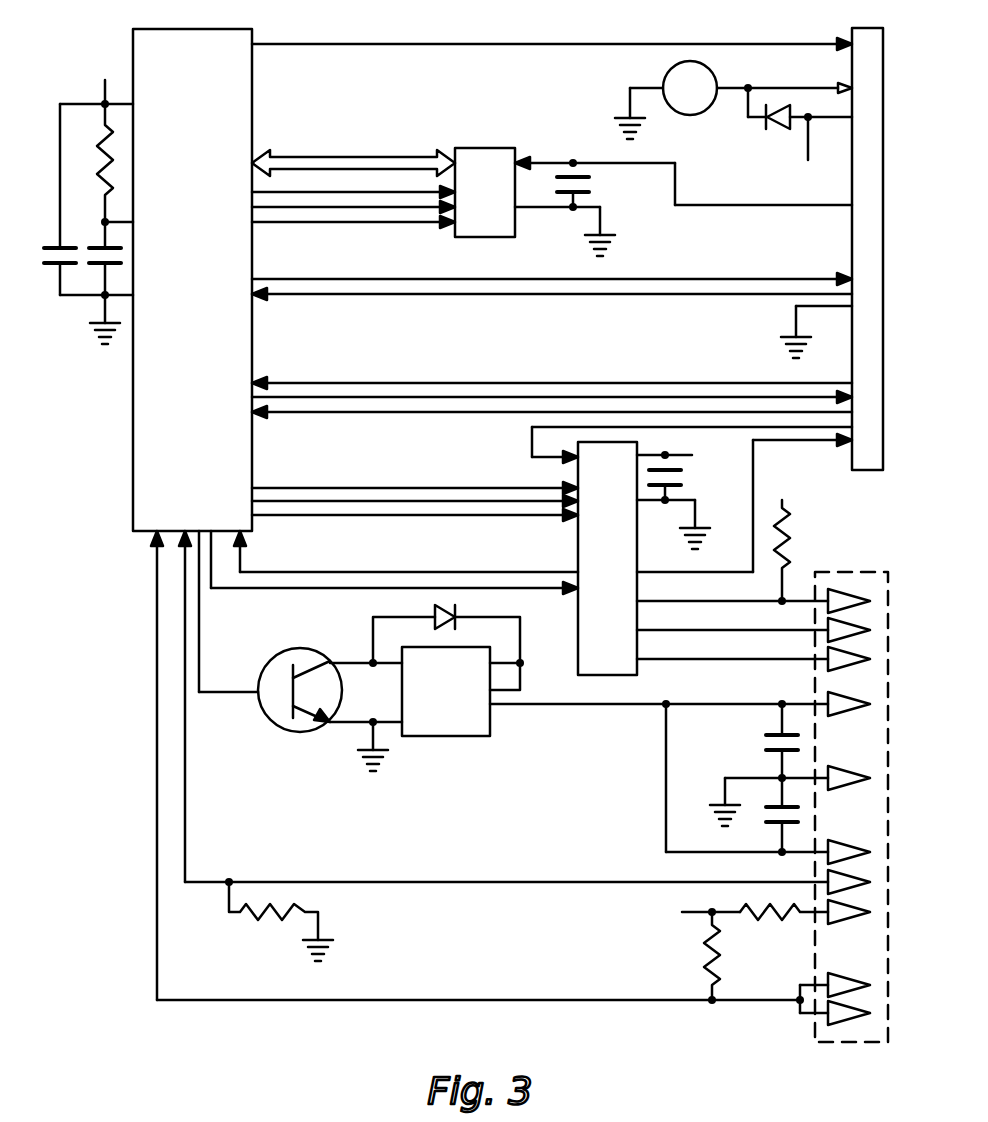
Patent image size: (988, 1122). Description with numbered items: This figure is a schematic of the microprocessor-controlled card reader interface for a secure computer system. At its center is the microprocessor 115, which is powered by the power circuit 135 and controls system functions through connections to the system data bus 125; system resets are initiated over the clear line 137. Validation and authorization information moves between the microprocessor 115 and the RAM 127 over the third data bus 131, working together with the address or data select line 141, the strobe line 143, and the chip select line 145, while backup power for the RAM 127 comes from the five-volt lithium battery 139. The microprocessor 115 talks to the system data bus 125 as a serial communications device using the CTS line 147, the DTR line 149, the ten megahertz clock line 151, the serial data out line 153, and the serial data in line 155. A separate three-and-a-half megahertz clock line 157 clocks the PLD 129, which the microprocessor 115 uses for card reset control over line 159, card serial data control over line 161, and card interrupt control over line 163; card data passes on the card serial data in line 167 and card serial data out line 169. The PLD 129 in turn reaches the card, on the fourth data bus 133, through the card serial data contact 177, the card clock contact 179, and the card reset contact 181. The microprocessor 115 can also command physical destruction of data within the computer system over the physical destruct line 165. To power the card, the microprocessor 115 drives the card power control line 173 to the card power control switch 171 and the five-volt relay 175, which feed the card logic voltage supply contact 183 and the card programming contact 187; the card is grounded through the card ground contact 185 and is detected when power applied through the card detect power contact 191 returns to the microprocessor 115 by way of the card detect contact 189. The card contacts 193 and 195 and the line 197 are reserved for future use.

The microprocessor 115 is at (254, 72).
The system data bus 125 is at (850, 250).
The random access memory (RAM) 127 is at (482, 146).
The program logic device (PLD) 129 is at (570, 556).
The third data bus 131 is at (388, 157).
The fourth data bus 133 is at (850, 572).
The power circuit 135 is at (80, 358).
The clear 137 is at (412, 46).
The +5 volt lithium battery 139 is at (692, 116).
The address or data select 141 is at (296, 226).
The strobe 143 is at (356, 210).
The chip select 145 is at (416, 196).
The clear to send (CTS) 147 is at (448, 296).
The data terminal ready (DTR) 149 is at (497, 282).
The 10 MHz clock 151 is at (296, 418).
The serial data out 153 is at (358, 400).
The serial data in 155 is at (418, 386).
The 3.5 MHz clock 157 is at (524, 440).
The card reset 159 is at (296, 522).
The card serial data control 161 is at (358, 504).
The card interrupt control 163 is at (418, 492).
The physical destruct 165 is at (812, 443).
The card serial data in 167 is at (460, 572).
The card serial data out 169 is at (270, 590).
The card power control switch 171 is at (302, 737).
The card power control line 173 is at (230, 693).
The +5 volt relay 175 is at (452, 738).
The card serial data contact 177 is at (741, 600).
The card clock contact 179 is at (741, 629).
The card reset contact 181 is at (741, 658).
The card logic voltage supply contact 183 is at (741, 703).
The card ground contact 185 is at (741, 777).
The card programming contact 187 is at (664, 820).
The card detect contact A 189 is at (741, 881).
The card detect power contact 191 is at (768, 920).
The reserved for future use 193 is at (800, 987).
The reserved for future use 195 is at (800, 1016).
The reserved for future use 197 is at (206, 999).